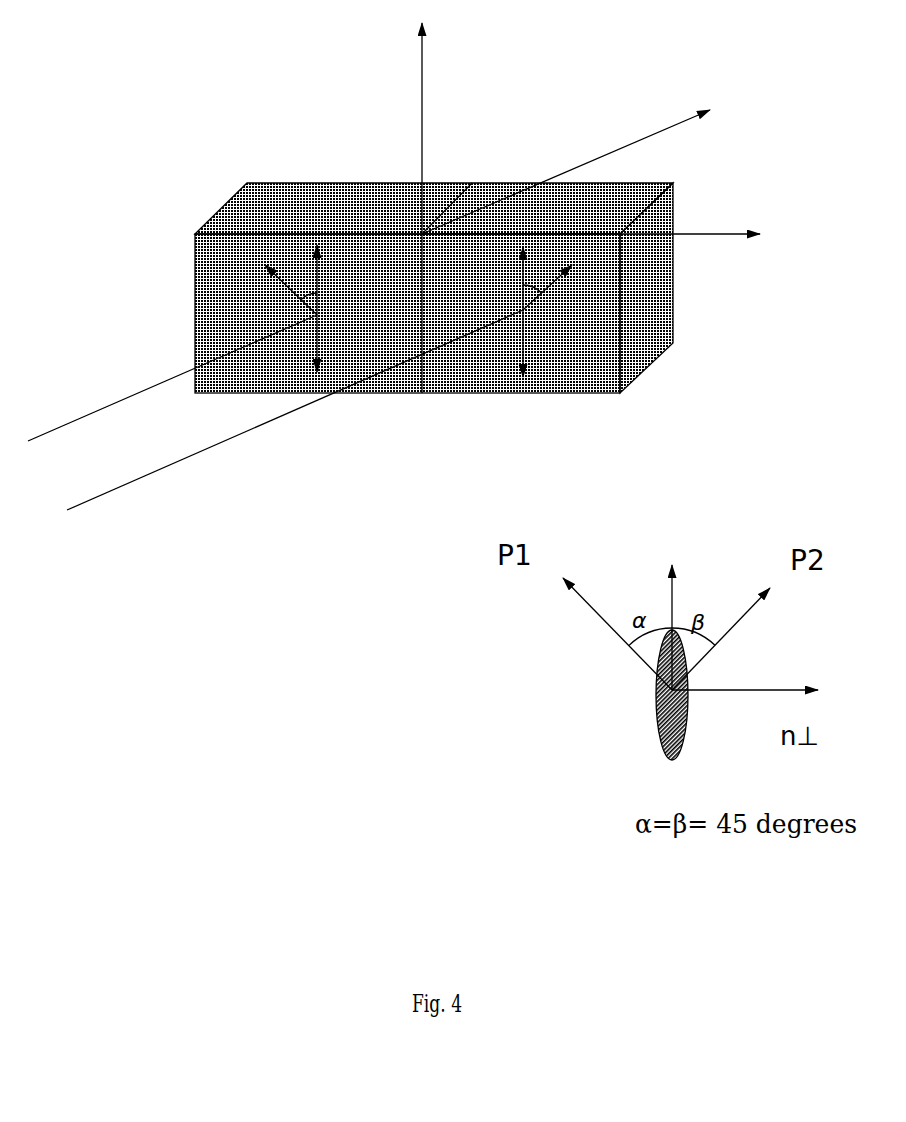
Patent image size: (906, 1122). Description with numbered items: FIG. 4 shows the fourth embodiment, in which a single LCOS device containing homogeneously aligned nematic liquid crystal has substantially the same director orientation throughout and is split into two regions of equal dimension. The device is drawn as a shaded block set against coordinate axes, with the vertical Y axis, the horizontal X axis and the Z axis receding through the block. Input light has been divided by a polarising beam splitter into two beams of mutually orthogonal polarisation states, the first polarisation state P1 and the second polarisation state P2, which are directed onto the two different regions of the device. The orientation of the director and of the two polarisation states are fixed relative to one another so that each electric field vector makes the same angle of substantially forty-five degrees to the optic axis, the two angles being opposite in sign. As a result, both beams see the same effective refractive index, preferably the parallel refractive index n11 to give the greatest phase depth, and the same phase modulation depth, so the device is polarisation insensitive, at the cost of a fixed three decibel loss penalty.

The first polarisation state P1 is at (117, 402).
The second polarisation state P2 is at (217, 418).
The X axis X is at (601, 220).
The Y axis Y is at (439, 123).
The Z axis Z is at (576, 153).
The parallel refractive index n11 is at (685, 604).